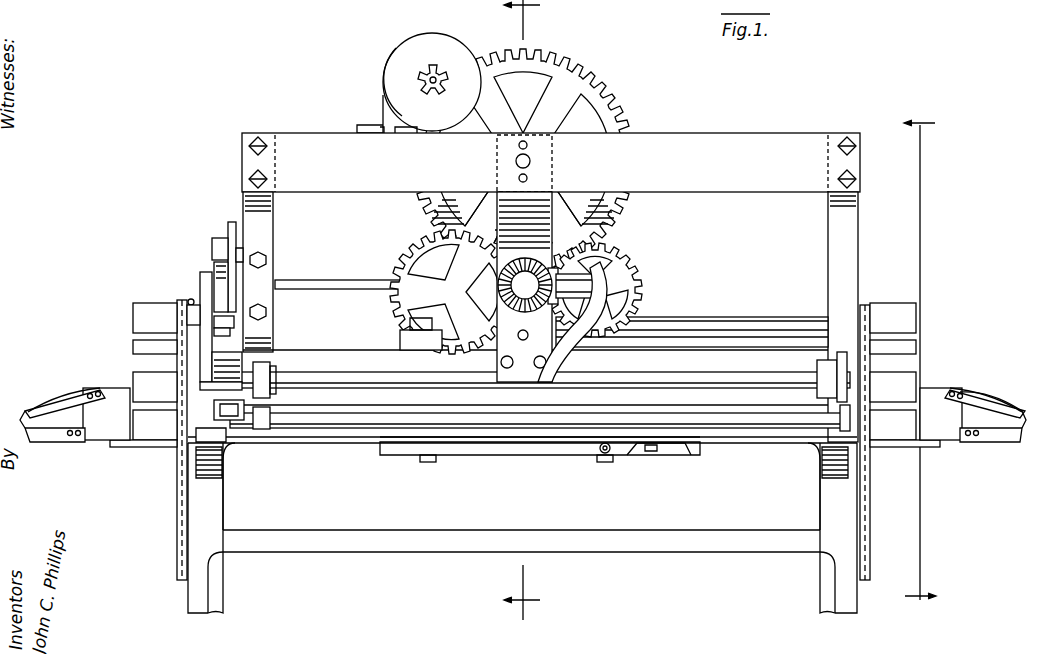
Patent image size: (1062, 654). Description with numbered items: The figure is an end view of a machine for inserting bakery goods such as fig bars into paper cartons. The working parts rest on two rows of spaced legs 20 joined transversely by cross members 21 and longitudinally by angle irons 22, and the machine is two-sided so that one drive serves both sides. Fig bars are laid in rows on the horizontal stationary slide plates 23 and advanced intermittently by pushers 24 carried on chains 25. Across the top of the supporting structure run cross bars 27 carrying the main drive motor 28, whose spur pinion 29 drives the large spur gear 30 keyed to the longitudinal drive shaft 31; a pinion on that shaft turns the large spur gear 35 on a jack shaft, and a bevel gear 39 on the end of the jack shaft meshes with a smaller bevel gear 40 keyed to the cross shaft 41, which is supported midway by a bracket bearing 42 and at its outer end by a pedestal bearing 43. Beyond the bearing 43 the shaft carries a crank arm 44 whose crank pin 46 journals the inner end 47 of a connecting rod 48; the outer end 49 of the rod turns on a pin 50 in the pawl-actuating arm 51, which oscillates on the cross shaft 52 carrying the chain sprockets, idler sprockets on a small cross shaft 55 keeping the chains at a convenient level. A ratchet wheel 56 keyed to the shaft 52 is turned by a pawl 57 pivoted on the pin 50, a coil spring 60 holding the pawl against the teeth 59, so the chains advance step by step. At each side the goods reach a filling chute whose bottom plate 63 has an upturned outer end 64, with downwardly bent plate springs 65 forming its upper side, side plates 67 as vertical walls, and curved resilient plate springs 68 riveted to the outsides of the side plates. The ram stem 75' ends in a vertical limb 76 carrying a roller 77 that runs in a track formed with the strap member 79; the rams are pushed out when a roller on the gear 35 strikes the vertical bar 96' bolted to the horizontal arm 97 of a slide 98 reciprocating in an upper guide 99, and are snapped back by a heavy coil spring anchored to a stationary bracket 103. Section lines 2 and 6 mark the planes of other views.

The section line 2- 2 is at (920, 359).
The section line 6- 6 is at (522, 321).
The legs 20 is at (834, 583).
The cross members 21 is at (515, 532).
The angle irons 22 is at (822, 462).
The slide plates 23 is at (925, 448).
The pushers 24 is at (910, 372).
The chains 25 is at (868, 472).
The cross bars 27 is at (695, 138).
The main drive motor 28 is at (458, 55).
The spur pinion 29 is at (430, 72).
The spur gear 30 is at (600, 78).
The drive shaft 31 is at (530, 158).
The spur gear 35 is at (632, 258).
The bevel gear 39 is at (522, 258).
The bevel gear 40 is at (548, 268).
The cross shaft 41 is at (370, 280).
The bracket bearing 42 is at (635, 303).
The pedestal bearing 43 is at (268, 262).
The crank arm 44 is at (230, 222).
The crank pin 46 is at (243, 255).
The inner end of connecting rod 47 is at (215, 240).
The connecting rod 48 is at (228, 282).
The outer end of connecting rod 49 is at (236, 322).
The pin 50 is at (232, 333).
The pawl-actuating arm 51 is at (204, 275).
The cross shaft 52 is at (660, 384).
The small cross shaft 55 is at (710, 416).
The ratchet wheel 56 is at (210, 394).
The pawl 57 is at (188, 315).
The teeth 59 is at (227, 367).
The coil spring 60 is at (188, 300).
The bottom plate 63 is at (962, 446).
The upwardly tilted end 64 is at (998, 446).
The plate springs 65 is at (30, 395).
The side plates 67 is at (932, 398).
The plate springs 68 is at (1010, 404).
The ram stem 75' is at (228, 454).
The vertical limb 76 is at (606, 462).
The roller 77 is at (598, 454).
The strap member 79 is at (520, 455).
The vertical bar 96' is at (395, 319).
The horizontal arm 97 is at (398, 342).
The slide 98 is at (468, 345).
The upper guide 99 is at (728, 324).
The stationary bracket 103 is at (235, 432).